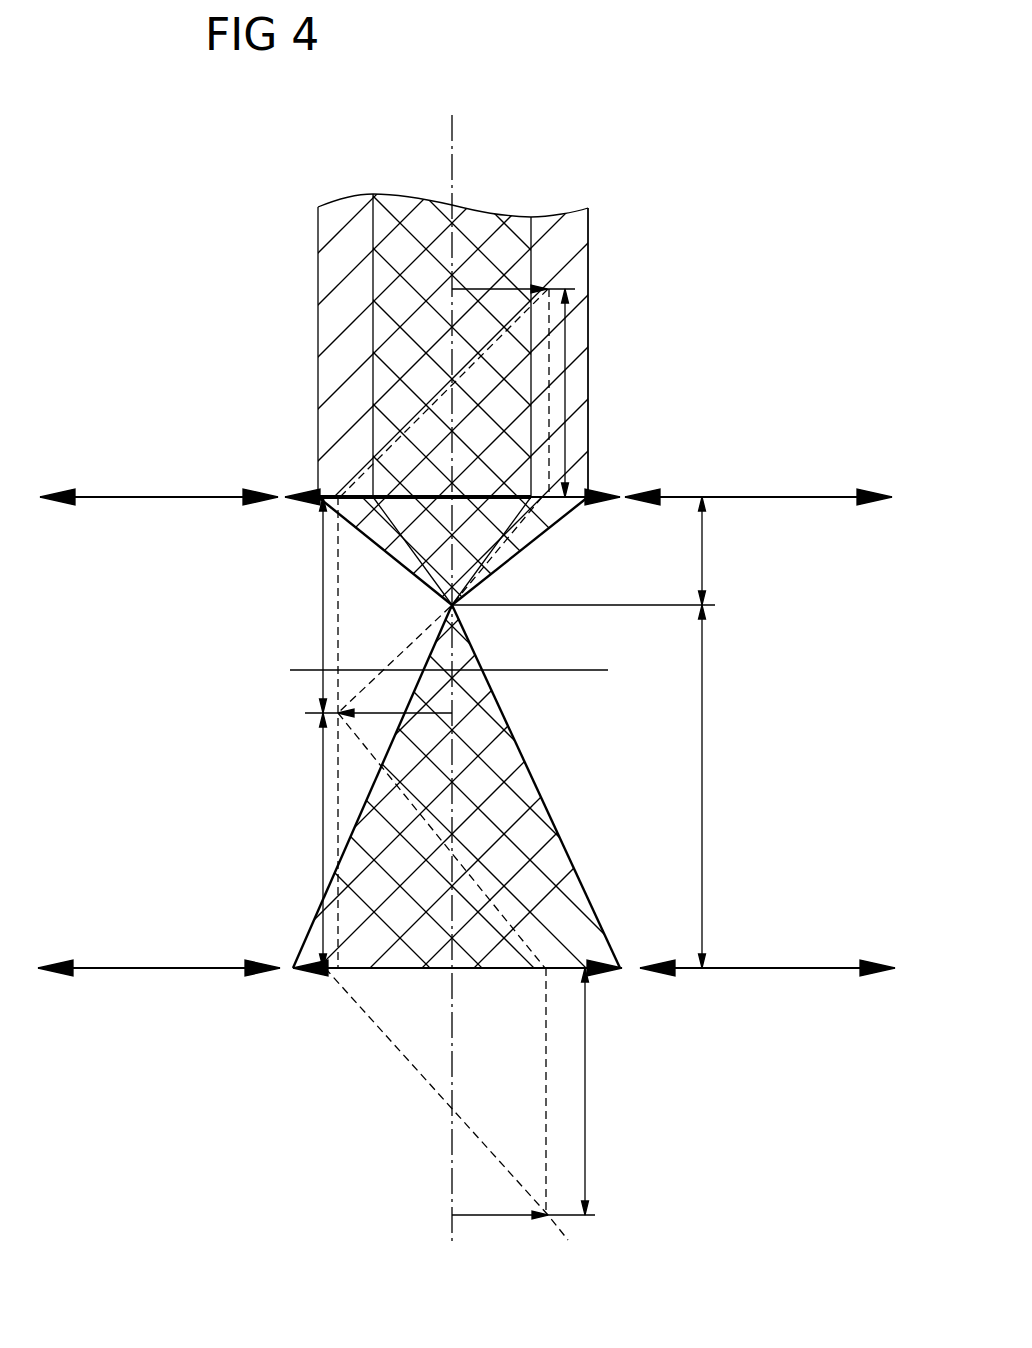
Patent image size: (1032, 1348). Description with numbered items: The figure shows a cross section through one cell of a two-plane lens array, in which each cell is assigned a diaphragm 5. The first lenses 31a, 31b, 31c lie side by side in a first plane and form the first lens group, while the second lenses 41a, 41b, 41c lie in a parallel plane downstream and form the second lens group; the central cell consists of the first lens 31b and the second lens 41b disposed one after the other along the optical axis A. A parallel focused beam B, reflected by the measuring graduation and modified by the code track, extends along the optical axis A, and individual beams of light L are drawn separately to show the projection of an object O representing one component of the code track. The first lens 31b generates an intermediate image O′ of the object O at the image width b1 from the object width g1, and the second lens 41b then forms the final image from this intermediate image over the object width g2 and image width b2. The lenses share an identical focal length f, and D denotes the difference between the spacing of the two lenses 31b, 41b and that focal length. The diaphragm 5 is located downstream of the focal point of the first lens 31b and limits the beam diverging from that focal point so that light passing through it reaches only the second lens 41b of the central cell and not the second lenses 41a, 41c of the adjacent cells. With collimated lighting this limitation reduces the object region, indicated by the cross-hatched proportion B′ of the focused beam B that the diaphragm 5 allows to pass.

The diaphragm 5 is at (570, 670).
The first individual lens of adjacent cell 31a is at (152, 497).
The first individual lens of central cell 31b is at (318, 398).
The first individual lens of adjacent cell 31c is at (755, 497).
The second individual lens of adjacent cell 41a is at (158, 967).
The second individual lens of central cell 41b is at (380, 967).
The second individual lens of adjacent cell 41c is at (793, 967).
The optical axis A is at (450, 160).
The object O is at (483, 287).
The intermediate image O′ is at (403, 707).
The focused beam B is at (590, 273).
The proportion of focused beam passed by diaphragm B′ is at (590, 220).
The beams of light L is at (547, 363).
The object width of first projection g1 is at (563, 407).
The image width of first projection b1 is at (305, 605).
The object width of second projection g2 is at (304, 840).
The image width of second projection b2 is at (606, 1091).
The focal length f is at (709, 551).
The difference between lens spacing and focal length D is at (714, 786).